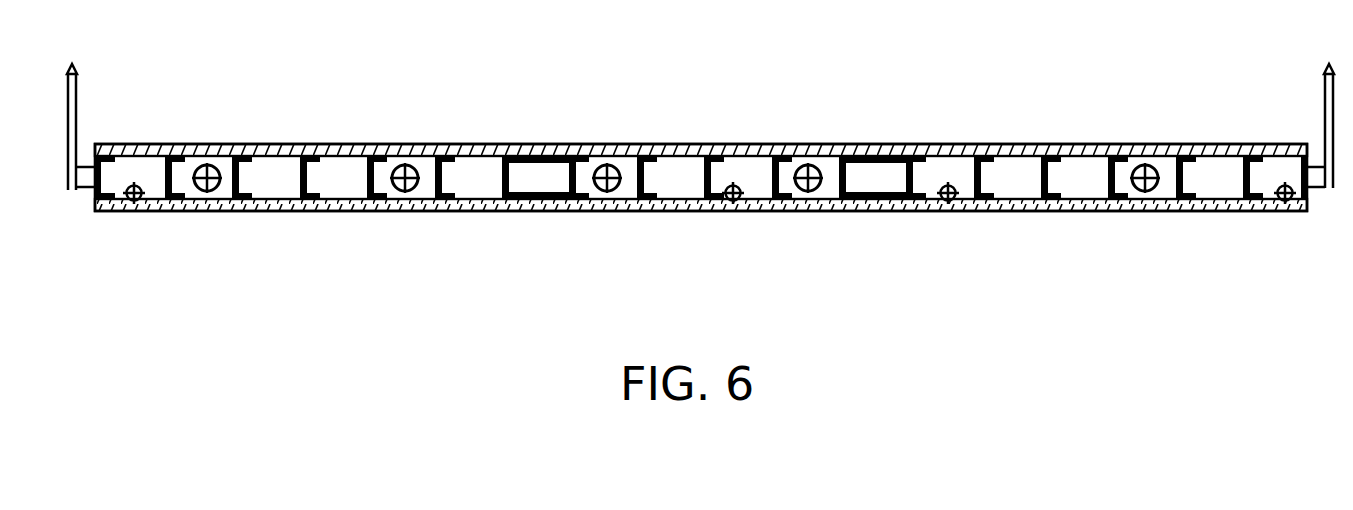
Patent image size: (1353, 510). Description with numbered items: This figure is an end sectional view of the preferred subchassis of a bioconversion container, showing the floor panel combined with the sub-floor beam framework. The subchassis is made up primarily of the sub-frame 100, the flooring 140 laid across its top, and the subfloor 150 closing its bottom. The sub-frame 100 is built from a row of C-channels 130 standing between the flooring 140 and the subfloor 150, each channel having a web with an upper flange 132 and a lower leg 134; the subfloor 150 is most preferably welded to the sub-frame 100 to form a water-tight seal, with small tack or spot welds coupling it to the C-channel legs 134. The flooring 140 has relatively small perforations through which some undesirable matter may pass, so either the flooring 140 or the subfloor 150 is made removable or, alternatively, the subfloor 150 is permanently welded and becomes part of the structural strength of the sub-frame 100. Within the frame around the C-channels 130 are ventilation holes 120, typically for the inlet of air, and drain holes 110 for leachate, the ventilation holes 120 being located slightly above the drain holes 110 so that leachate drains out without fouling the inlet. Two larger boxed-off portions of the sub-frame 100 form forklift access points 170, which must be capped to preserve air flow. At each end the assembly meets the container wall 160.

The sub-frame 100 is at (1209, 178).
The drain holes 110 is at (957, 206).
The ventilation holes 120 is at (207, 164).
The C-channels 130 is at (645, 174).
The upper flange of stud 132 is at (320, 156).
The C-channel legs 134 is at (315, 200).
The flooring 140 is at (405, 143).
The subfloor 150 is at (190, 211).
The wall 160 is at (76, 104).
The forklift access points 170 is at (541, 156).